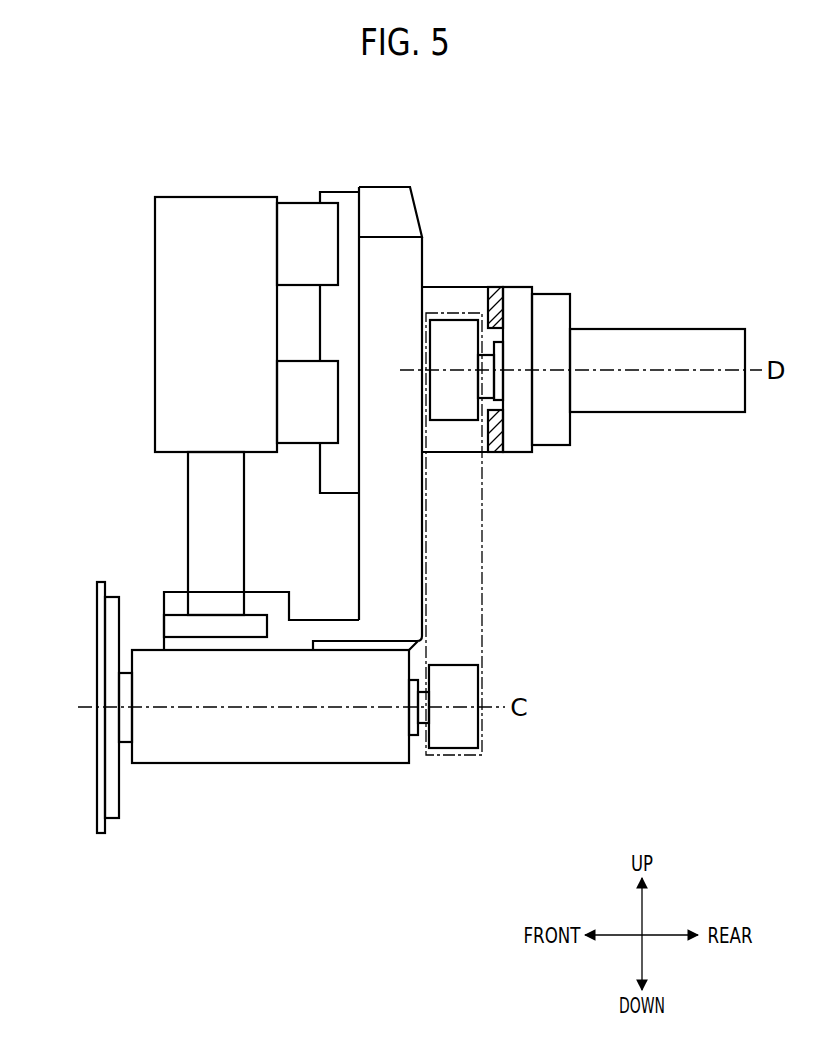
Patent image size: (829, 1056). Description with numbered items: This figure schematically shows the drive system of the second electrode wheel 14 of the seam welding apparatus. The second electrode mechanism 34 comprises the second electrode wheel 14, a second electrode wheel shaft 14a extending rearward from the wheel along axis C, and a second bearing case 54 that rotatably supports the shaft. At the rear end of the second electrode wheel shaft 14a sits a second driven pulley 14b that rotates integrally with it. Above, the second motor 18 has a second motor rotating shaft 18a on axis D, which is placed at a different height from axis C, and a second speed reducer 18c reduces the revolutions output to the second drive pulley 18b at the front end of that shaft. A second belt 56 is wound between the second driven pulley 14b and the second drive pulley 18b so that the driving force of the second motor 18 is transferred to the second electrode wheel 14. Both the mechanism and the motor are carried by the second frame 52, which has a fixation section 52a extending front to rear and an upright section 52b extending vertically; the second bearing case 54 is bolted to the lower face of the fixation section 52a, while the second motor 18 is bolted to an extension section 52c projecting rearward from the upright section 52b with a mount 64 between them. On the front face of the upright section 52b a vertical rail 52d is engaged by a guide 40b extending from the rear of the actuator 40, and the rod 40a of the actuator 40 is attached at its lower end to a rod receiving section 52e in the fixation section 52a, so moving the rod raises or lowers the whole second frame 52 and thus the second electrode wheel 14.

The second electrode wheel 14 is at (102, 635).
The second electrode wheel shaft 14a is at (125, 723).
The second driven pulley 14b is at (456, 730).
The second motor 18 is at (650, 340).
The second motor rotating shaft 18a is at (487, 384).
The second drive pulley 18b is at (452, 350).
The second speed reducer 18c is at (555, 310).
The second electrode mechanism 34 is at (201, 770).
The actuator 40 is at (198, 210).
The rod 40a is at (205, 494).
The guide 40b is at (300, 208).
The second frame 52 is at (358, 409).
The fixation section 52a is at (297, 640).
The upright section 52b is at (395, 523).
The extension section 52c is at (494, 300).
The rail 52d is at (337, 200).
The rod receiving section 52e is at (265, 600).
The second bearing case 54 is at (350, 742).
The second belt 56 is at (486, 565).
The mount 64 is at (517, 300).